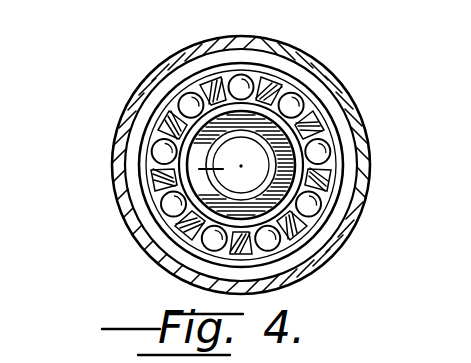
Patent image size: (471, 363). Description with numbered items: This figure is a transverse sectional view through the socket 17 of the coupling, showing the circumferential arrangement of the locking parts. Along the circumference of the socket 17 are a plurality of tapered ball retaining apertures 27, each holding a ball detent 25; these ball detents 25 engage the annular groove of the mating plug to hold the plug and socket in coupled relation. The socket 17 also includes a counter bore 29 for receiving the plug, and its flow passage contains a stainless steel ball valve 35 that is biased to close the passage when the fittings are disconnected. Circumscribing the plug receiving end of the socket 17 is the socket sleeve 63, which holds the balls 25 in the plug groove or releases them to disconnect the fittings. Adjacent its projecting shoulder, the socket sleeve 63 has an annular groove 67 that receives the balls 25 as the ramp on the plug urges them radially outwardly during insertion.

The socket 17 is at (112, 252).
The ball detents 25 is at (187, 70).
The ball retaining apertures 27 is at (155, 82).
The counter bore 29 is at (347, 103).
The ball valve 35 is at (118, 190).
The socket sleeve 63 is at (300, 50).
The annular groove 67 is at (318, 72).